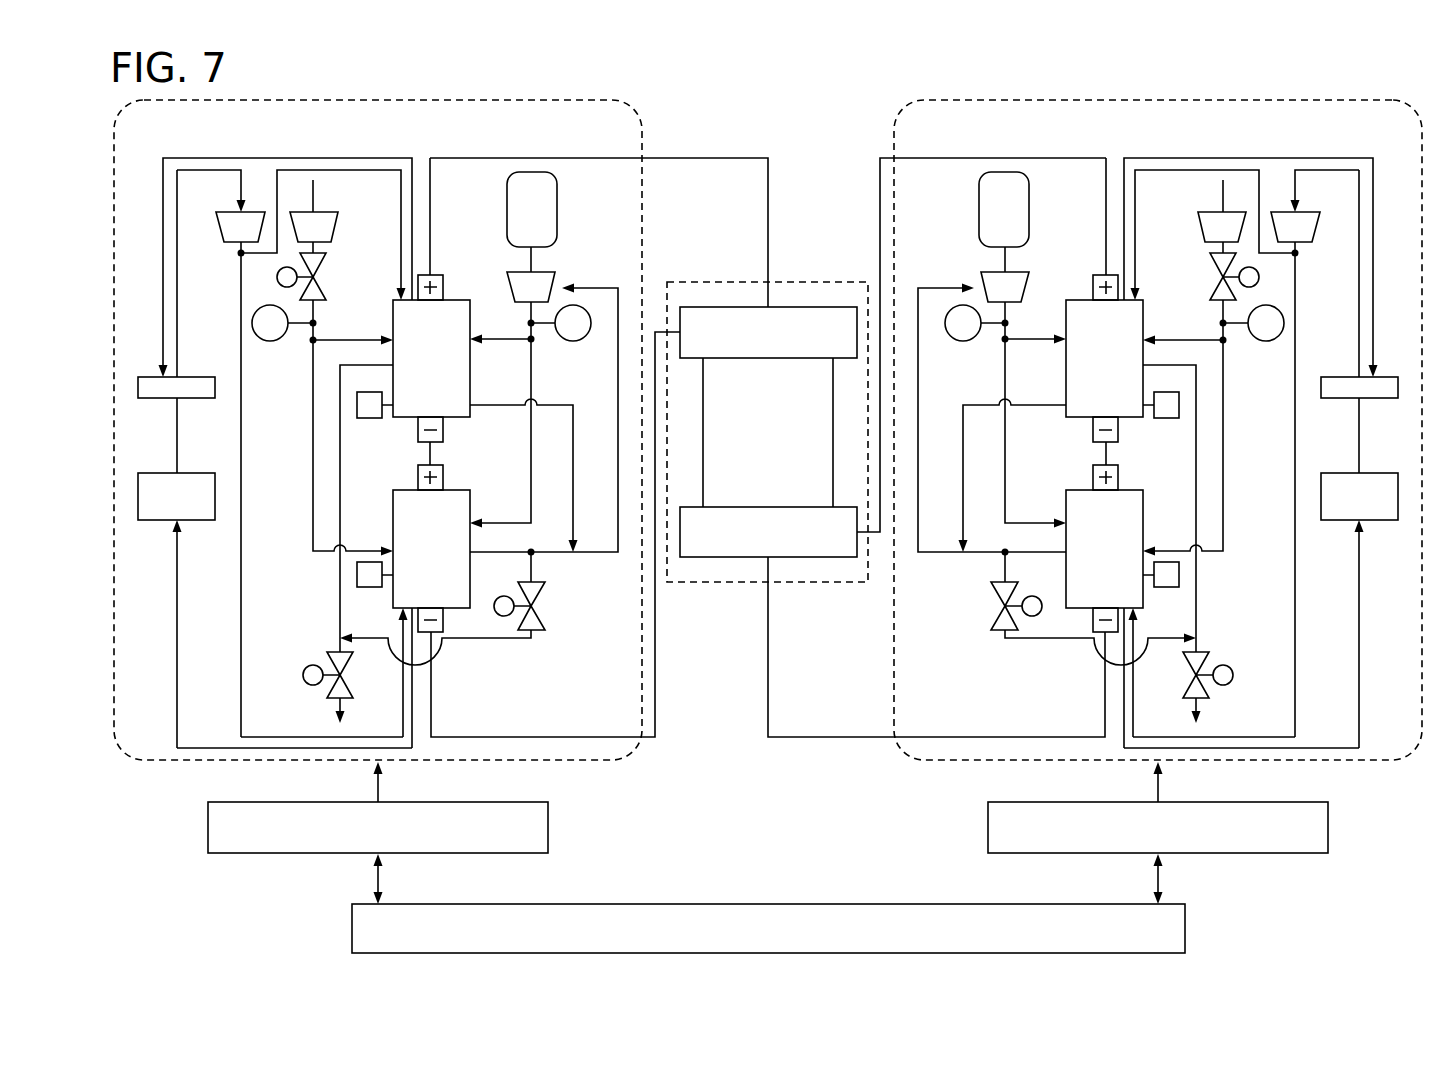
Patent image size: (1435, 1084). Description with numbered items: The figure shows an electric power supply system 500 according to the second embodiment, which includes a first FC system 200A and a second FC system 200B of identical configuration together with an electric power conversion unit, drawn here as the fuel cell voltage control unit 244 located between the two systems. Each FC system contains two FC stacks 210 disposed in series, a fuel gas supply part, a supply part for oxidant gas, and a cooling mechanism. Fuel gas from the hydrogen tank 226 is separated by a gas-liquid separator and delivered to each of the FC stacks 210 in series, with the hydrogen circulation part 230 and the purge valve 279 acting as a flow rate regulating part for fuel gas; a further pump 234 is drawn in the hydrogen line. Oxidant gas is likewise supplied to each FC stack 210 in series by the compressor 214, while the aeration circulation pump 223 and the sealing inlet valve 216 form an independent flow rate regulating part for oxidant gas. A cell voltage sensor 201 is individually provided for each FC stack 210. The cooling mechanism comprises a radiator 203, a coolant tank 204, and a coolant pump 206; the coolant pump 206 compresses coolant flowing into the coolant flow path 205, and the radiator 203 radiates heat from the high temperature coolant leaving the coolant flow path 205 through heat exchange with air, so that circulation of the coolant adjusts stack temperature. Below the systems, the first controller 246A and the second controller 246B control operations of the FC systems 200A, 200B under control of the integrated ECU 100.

The electric power supply system 500 is at (1343, 88).
The first FC system 200A is at (378, 99).
The second FC system 200B is at (1158, 99).
The fuel cell voltage control unit 244 is at (830, 281).
The first controller 246A is at (549, 828).
The second controller 246B is at (1329, 828).
The integrated electronic control unit 100 is at (1186, 930).
The radiator 203 is at (155, 398).
The coolant tank 204 is at (155, 520).
The coolant pump 206 is at (218, 226).
The compressor 214 is at (292, 187).
The sealing inlet valve 216 is at (327, 272).
The aeration circulation pump 223 is at (270, 342).
The hydrogen circulation part 230 is at (573, 342).
The hydrogen tank 226 is at (557, 207).
The hydrogen pump 234 is at (543, 272).
The FC stack 210 is at (470, 298).
The cell voltage sensor 201 is at (365, 418).
The purge valve 279 is at (540, 600).
The coolant flow path 205 is at (280, 736).